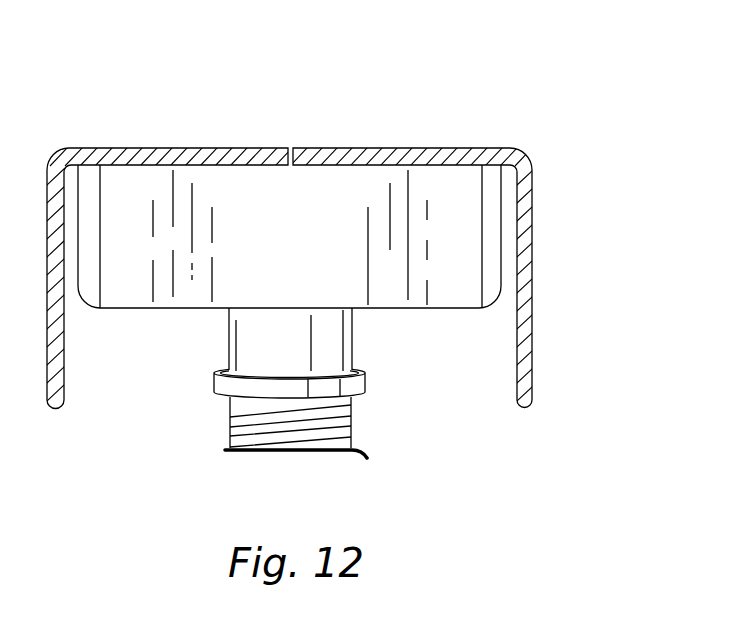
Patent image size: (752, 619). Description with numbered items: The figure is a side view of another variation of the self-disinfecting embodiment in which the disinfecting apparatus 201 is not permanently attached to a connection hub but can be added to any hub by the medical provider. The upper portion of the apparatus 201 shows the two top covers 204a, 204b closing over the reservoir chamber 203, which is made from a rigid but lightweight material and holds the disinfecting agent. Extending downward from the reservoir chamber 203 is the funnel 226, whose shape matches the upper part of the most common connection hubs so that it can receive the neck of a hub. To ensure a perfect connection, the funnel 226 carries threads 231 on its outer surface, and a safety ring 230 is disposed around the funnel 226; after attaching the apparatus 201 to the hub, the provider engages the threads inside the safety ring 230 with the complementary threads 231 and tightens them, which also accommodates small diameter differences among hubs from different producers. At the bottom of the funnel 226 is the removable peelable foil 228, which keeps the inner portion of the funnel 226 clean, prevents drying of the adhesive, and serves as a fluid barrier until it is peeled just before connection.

The disinfecting apparatus 201 is at (596, 149).
The top cover 204a is at (197, 148).
The top cover 204b is at (386, 148).
The reservoir chamber 203 is at (421, 307).
The funnel 226 is at (280, 356).
The safety ring 230 is at (352, 386).
The threads 231 is at (287, 428).
The removable foil 228 is at (323, 453).